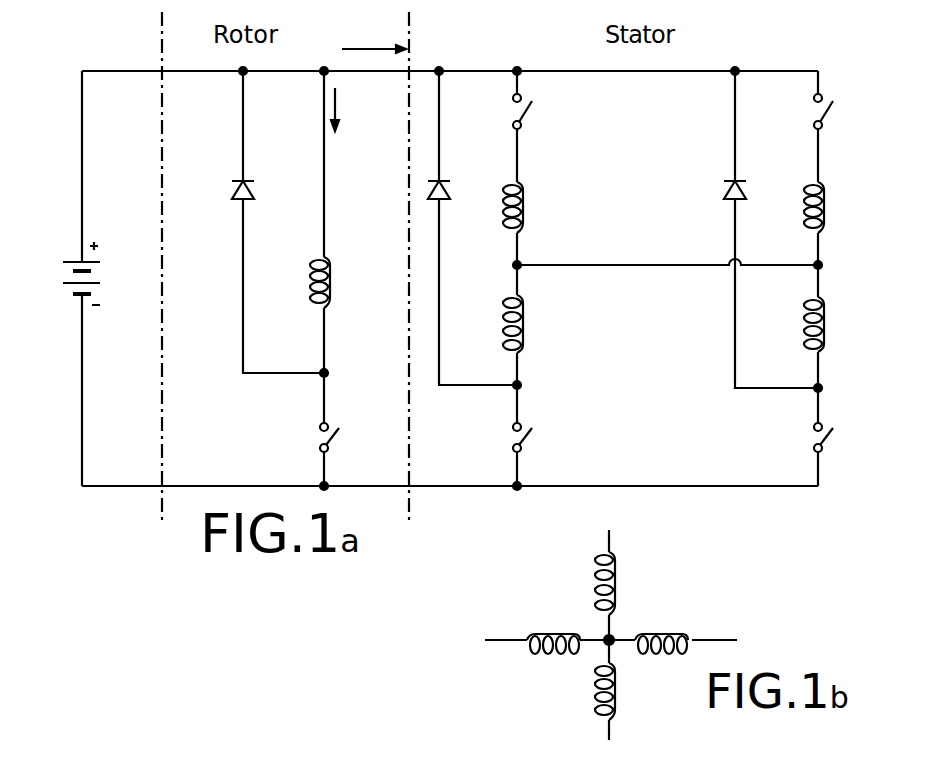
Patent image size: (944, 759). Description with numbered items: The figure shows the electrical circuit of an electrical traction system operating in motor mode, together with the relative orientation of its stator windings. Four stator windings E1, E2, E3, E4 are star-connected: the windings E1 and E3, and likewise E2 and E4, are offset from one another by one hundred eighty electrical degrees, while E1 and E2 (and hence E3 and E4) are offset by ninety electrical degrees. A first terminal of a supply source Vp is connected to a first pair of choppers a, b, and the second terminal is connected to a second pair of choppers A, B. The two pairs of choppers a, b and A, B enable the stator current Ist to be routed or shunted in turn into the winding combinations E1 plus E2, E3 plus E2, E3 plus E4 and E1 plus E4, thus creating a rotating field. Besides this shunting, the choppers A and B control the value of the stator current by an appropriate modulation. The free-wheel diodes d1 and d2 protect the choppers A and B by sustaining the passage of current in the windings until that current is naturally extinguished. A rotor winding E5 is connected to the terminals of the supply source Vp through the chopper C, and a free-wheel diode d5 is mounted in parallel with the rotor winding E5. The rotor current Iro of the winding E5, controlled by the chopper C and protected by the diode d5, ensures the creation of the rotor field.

In FIG. 1A, the supply source Vp is at (102, 273).
In FIG. 1A, the stator current Ist is at (374, 37).
In FIG. 1A, the rotor current Iro is at (352, 109).
In FIG. 1A, the freewheel diode d5 is at (261, 222).
In FIG. 1A, the free wheel diode d1 is at (472, 228).
In FIG. 1A, the free wheel diode d2 is at (756, 229).
In FIG. 1A, the rotor winding E5 is at (343, 222).
In FIG. 1A, the stator winding E1 is at (535, 223).
In FIG. 1B, the stator winding E1 is at (628, 583).
In FIG. 1A, the stator winding E2 is at (535, 325).
In FIG. 1B, the stator winding E2 is at (661, 625).
In FIG. 1A, the stator winding E3 is at (836, 239).
In FIG. 1B, the stator winding E3 is at (629, 691).
In FIG. 1A, the stator winding E4 is at (836, 342).
In FIG. 1B, the stator winding E4 is at (553, 625).
In FIG. 1A, the chopper a is at (532, 126).
In FIG. 1A, the chopper b is at (833, 126).
In FIG. 1A, the chopper A is at (533, 435).
In FIG. 1A, the chopper B is at (836, 437).
In FIG. 1A, the chopper C is at (340, 429).